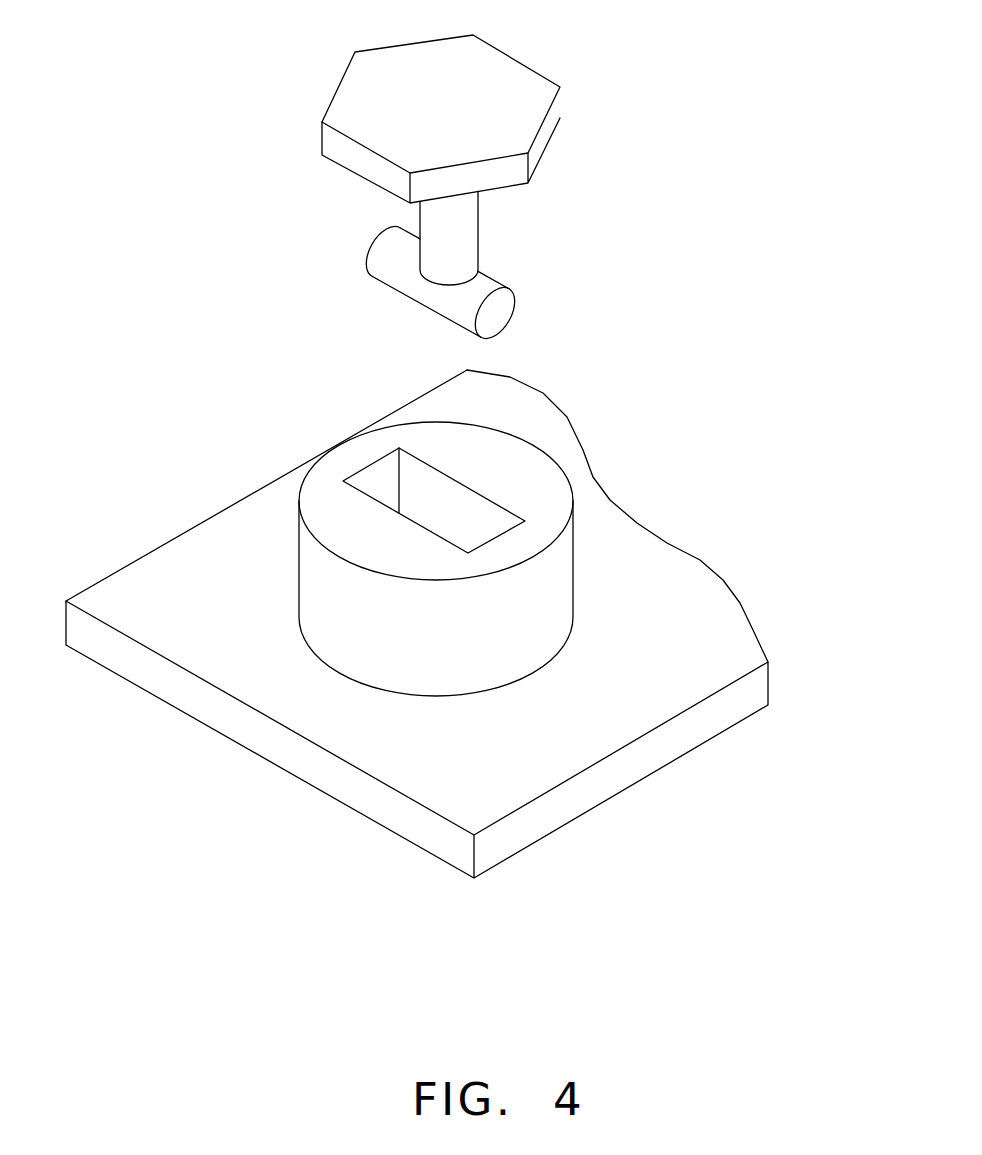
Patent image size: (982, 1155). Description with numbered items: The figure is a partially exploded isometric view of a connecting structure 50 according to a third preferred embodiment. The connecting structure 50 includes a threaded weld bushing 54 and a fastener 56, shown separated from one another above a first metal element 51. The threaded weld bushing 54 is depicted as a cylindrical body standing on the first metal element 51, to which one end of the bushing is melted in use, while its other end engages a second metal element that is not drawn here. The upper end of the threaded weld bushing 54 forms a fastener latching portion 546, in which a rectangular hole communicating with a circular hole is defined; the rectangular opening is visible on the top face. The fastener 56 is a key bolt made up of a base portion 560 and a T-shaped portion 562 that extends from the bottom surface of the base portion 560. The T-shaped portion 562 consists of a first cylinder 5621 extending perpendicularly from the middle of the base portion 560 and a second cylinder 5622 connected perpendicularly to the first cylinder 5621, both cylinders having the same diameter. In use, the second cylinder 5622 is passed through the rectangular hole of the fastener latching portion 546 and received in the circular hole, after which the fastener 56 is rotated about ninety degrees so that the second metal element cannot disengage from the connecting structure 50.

The connecting structure 50 is at (762, 83).
The first metal element 51 is at (657, 653).
The threaded weld bushing 54 is at (517, 607).
The fastener latching portion 546 is at (467, 517).
The fastener 56 is at (533, 186).
The base portion 560 is at (507, 102).
The T-shaped portion 562 is at (539, 269).
The first cylinder 5621 is at (452, 240).
The second cylinder 5622 is at (452, 302).